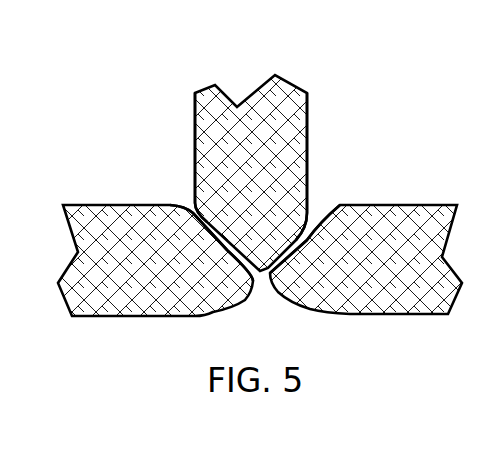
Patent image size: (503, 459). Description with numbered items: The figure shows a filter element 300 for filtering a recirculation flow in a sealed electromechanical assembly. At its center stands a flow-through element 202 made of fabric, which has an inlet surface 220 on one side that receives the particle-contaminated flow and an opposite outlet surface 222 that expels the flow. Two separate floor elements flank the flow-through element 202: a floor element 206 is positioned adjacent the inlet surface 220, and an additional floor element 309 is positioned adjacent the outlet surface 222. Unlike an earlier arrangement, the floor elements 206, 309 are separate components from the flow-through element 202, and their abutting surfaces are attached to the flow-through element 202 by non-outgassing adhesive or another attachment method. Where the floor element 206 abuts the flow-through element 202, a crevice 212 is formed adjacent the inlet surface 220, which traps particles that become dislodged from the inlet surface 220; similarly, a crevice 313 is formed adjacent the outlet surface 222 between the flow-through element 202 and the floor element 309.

The filter element 300 is at (138, 75).
The flow-through element 202 is at (252, 90).
The inlet surface 220 is at (193, 133).
The outlet surface 222 is at (307, 128).
The crevice 212 is at (187, 200).
The floor element 206 is at (85, 317).
The crevice 313 is at (323, 185).
The floor element 309 is at (398, 205).